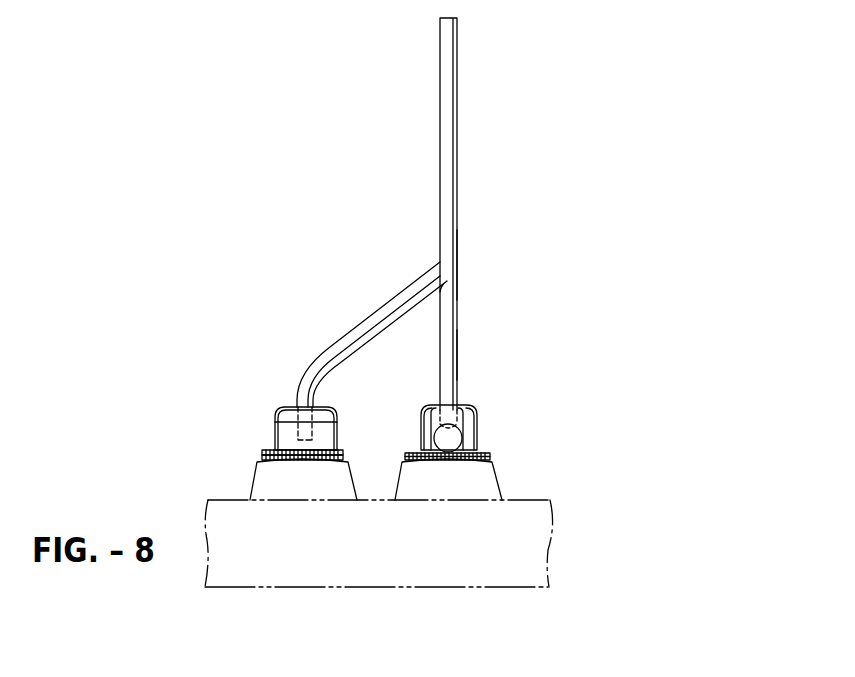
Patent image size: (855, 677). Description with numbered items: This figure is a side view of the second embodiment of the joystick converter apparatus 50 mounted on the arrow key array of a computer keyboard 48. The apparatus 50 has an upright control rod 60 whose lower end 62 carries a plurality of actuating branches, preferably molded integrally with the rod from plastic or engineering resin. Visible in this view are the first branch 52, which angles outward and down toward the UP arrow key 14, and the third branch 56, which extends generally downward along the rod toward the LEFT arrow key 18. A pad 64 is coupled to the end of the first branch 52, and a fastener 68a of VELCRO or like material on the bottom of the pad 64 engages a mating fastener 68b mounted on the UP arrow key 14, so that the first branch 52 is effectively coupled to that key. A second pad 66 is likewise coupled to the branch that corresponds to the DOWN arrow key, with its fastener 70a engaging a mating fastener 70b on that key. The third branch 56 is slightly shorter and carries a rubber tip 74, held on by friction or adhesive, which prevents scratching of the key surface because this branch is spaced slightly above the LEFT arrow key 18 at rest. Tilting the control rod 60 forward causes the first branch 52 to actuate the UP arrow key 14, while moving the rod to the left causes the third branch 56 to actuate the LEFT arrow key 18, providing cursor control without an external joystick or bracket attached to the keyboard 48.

The joystick converter apparatus 50 is at (321, 217).
The control rod 60 is at (457, 58).
The lower end 62 is at (462, 268).
The third branch 56 is at (458, 355).
The first branch 52 is at (356, 318).
The pad 64 is at (286, 410).
The pad 66 is at (478, 408).
The rubber tip 74 is at (432, 422).
The fastener 68a is at (264, 450).
The mating fastener 68b is at (266, 462).
The fastener 70a is at (484, 454).
The mating fastener 70b is at (412, 460).
The UP arrow key 14 is at (290, 490).
The LEFT arrow key 18 is at (443, 490).
The computer keyboard 48 is at (442, 573).